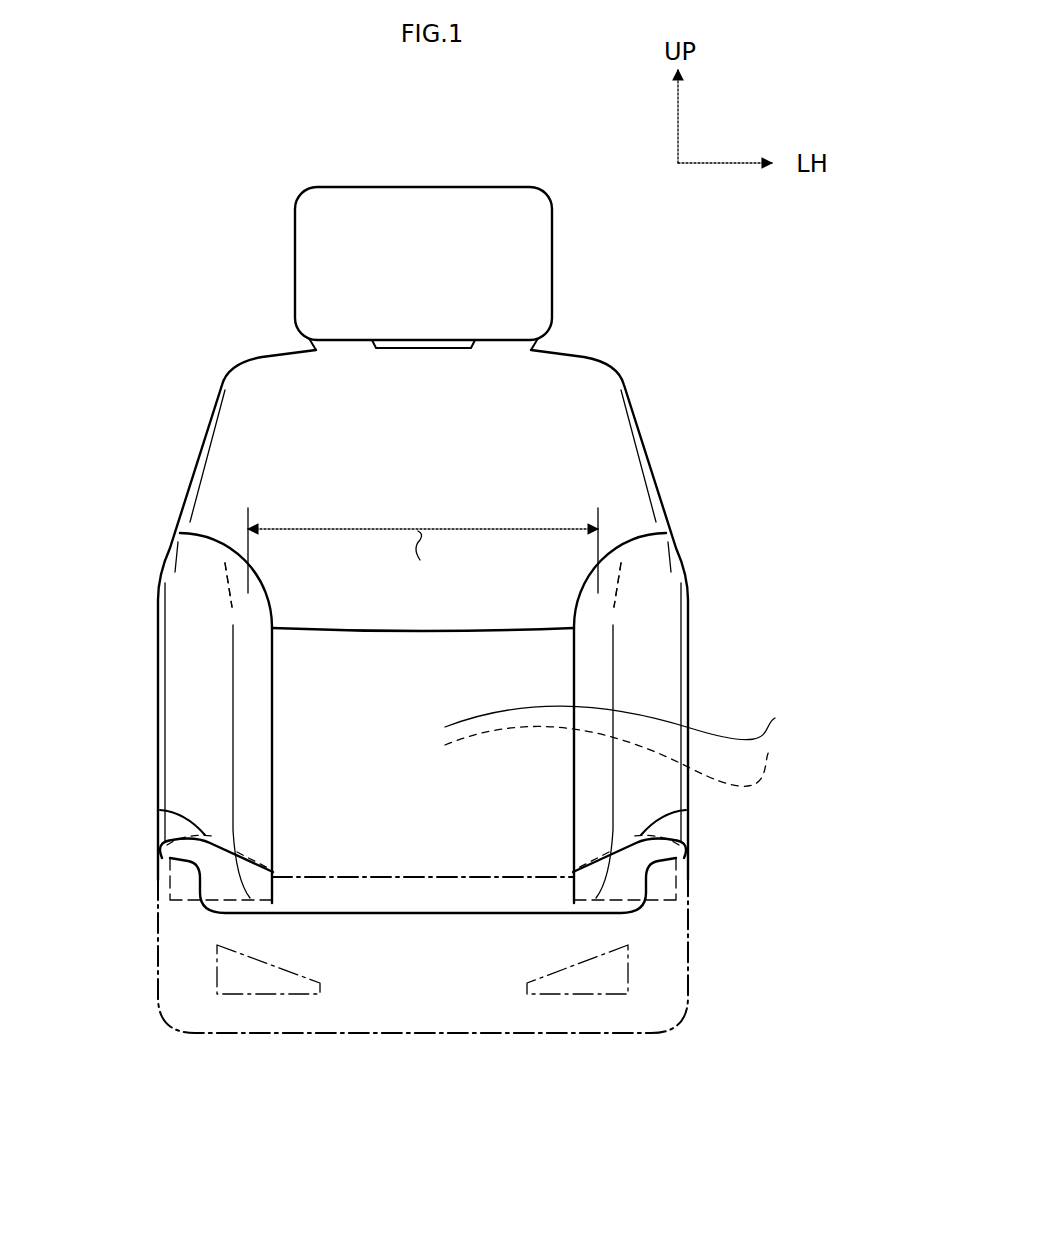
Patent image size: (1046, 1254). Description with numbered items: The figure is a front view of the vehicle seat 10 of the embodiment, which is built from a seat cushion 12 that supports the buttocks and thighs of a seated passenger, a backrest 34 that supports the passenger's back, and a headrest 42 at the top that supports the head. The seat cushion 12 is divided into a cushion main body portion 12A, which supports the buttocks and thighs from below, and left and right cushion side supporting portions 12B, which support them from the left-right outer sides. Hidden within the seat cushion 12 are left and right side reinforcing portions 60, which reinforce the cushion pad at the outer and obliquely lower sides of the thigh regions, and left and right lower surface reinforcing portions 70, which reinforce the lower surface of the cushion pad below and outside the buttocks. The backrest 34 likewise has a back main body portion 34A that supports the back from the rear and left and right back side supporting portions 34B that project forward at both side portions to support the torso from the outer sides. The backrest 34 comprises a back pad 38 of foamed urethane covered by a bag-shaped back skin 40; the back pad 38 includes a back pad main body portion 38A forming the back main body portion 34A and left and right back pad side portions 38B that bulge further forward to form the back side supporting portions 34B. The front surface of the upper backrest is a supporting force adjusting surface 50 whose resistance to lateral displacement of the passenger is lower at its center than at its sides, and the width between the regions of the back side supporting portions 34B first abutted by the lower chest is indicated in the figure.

The vehicle seat 10 is at (207, 202).
The seat cushion 12 is at (690, 945).
The cushion main body portion 12A is at (437, 875).
The cushion side supporting portions 12B is at (160, 810).
The backrest 34 is at (650, 462).
The back main body portion 34A is at (546, 684).
The back side supporting portions 34B is at (190, 684).
The back pad 38 is at (238, 483).
The back pad main body portion 38A is at (633, 756).
The back pad side portions 38B is at (185, 722).
The back skin 40 is at (250, 432).
The headrest 42 is at (552, 252).
The supporting force adjusting surface 50 is at (432, 430).
The side reinforcing portions 60 is at (170, 882).
The lower surface reinforcing portions 70 is at (265, 995).